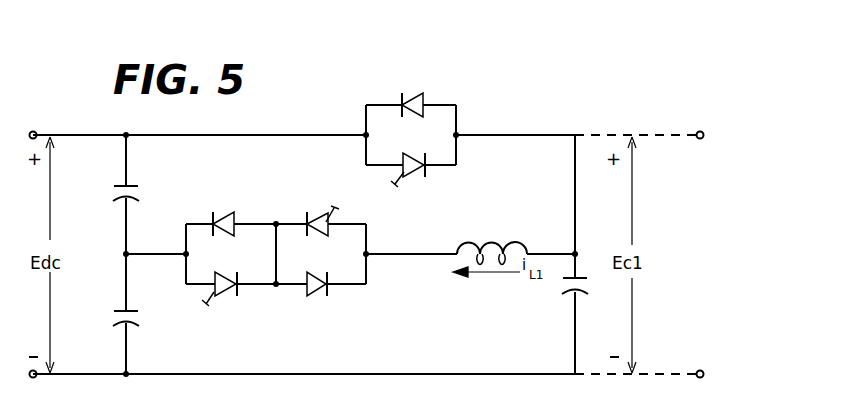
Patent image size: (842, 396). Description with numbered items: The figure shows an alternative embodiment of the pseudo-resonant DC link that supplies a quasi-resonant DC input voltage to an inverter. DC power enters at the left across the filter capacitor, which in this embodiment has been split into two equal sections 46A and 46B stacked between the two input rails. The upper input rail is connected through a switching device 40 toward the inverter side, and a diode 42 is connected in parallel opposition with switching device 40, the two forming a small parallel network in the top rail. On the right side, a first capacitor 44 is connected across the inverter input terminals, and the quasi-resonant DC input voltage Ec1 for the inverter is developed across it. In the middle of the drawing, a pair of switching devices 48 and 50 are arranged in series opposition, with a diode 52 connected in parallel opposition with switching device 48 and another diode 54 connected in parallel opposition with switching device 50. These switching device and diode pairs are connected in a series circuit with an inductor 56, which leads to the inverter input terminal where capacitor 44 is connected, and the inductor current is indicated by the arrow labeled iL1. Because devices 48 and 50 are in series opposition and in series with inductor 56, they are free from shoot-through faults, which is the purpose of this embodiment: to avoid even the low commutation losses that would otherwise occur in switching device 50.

The switching device 40 is at (410, 172).
The diode 42 is at (410, 95).
The first capacitor 44 is at (559, 285).
The capacitor section 46A is at (113, 200).
The capacitor section 46B is at (114, 318).
The switching device 48 is at (227, 290).
The switching device 50 is at (316, 212).
The diode 52 is at (224, 211).
The diode 54 is at (320, 290).
The inductor 56 is at (497, 242).